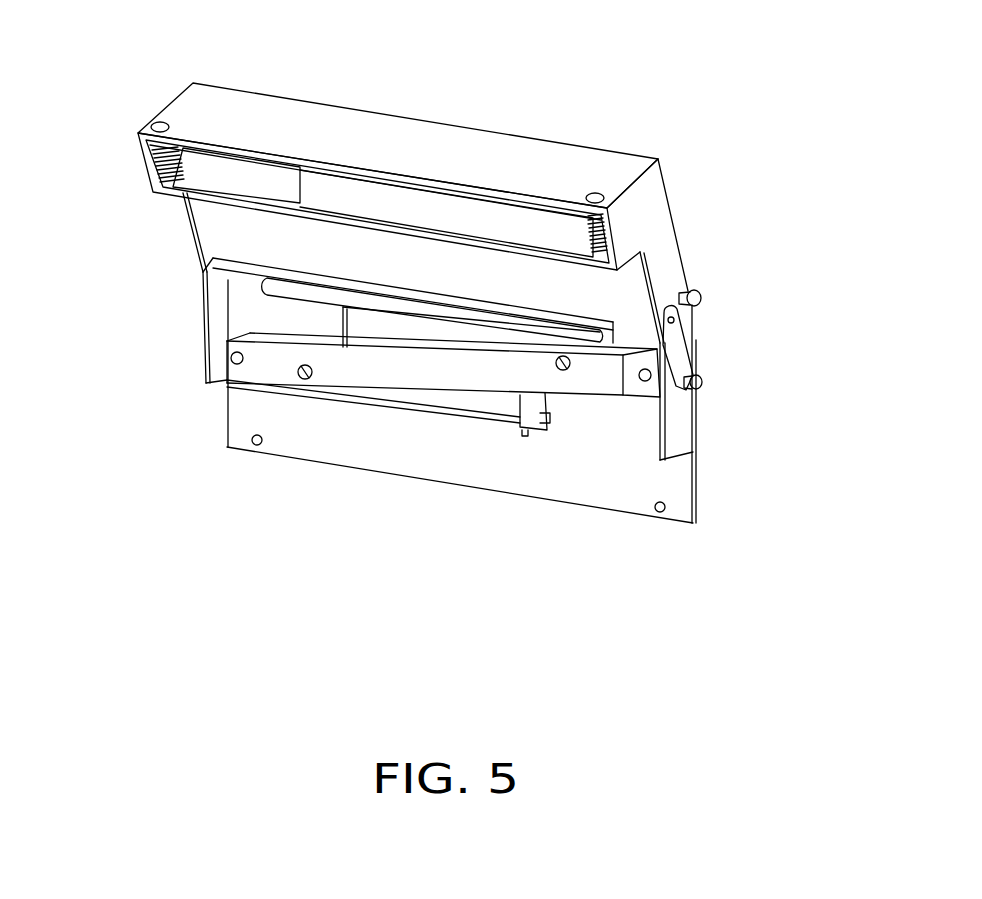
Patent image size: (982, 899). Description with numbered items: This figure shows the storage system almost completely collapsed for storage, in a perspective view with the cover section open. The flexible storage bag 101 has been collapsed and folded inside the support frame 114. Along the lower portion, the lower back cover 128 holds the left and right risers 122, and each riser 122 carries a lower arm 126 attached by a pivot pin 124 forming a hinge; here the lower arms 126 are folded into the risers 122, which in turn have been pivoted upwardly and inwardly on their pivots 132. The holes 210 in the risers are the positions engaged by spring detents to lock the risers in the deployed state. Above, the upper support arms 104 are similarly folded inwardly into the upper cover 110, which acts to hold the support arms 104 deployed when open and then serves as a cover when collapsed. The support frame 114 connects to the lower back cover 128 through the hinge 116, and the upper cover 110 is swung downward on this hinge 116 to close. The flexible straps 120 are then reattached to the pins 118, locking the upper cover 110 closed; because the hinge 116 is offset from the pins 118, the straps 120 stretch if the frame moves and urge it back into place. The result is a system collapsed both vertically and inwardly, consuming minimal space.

The storage bag 101 is at (327, 290).
The upper support arms 104 is at (383, 149).
The upper cover 110 is at (405, 138).
The support frame 114 is at (728, 242).
The hinge 116 is at (327, 320).
The pins 118 is at (749, 371).
The flexible straps 120 is at (742, 352).
The risers 122 is at (474, 513).
The pivot pins 124 is at (583, 567).
The lower arms 126 is at (489, 501).
The lower back cover 128 is at (514, 428).
The pivots 132 is at (411, 423).
The holes 210 is at (523, 518).